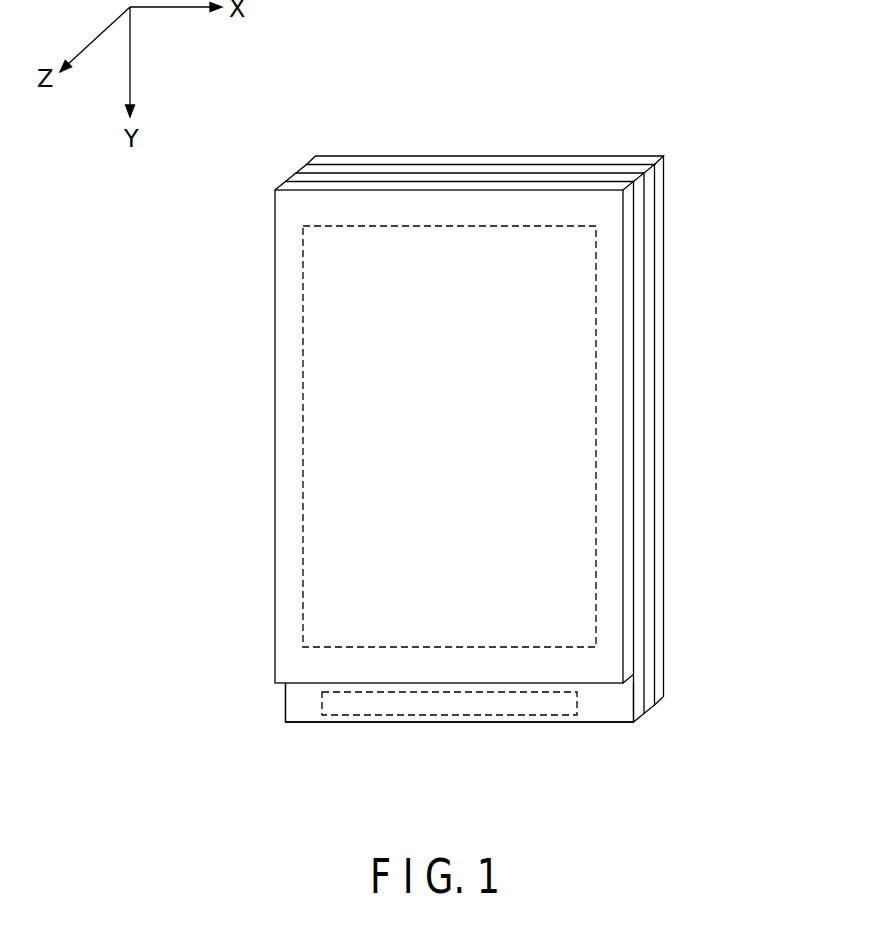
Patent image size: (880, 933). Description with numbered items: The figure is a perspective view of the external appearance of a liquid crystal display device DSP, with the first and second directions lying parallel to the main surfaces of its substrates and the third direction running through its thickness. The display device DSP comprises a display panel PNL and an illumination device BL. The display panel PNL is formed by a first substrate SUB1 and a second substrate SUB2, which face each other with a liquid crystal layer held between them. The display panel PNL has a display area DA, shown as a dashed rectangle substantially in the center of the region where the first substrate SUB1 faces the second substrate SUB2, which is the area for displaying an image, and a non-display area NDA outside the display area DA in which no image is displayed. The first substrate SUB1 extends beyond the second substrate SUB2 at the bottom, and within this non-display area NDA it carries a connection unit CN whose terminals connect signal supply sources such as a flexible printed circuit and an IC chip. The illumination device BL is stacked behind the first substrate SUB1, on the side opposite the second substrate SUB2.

The liquid crystal display device DSP is at (475, 422).
The display panel PNL is at (464, 453).
The illumination device BL is at (677, 300).
The first substrate SUB1 is at (506, 486).
The second substrate SUB2 is at (281, 684).
The display area DA is at (291, 443).
The non-display area NDA is at (295, 733).
The connection unit CN is at (449, 706).